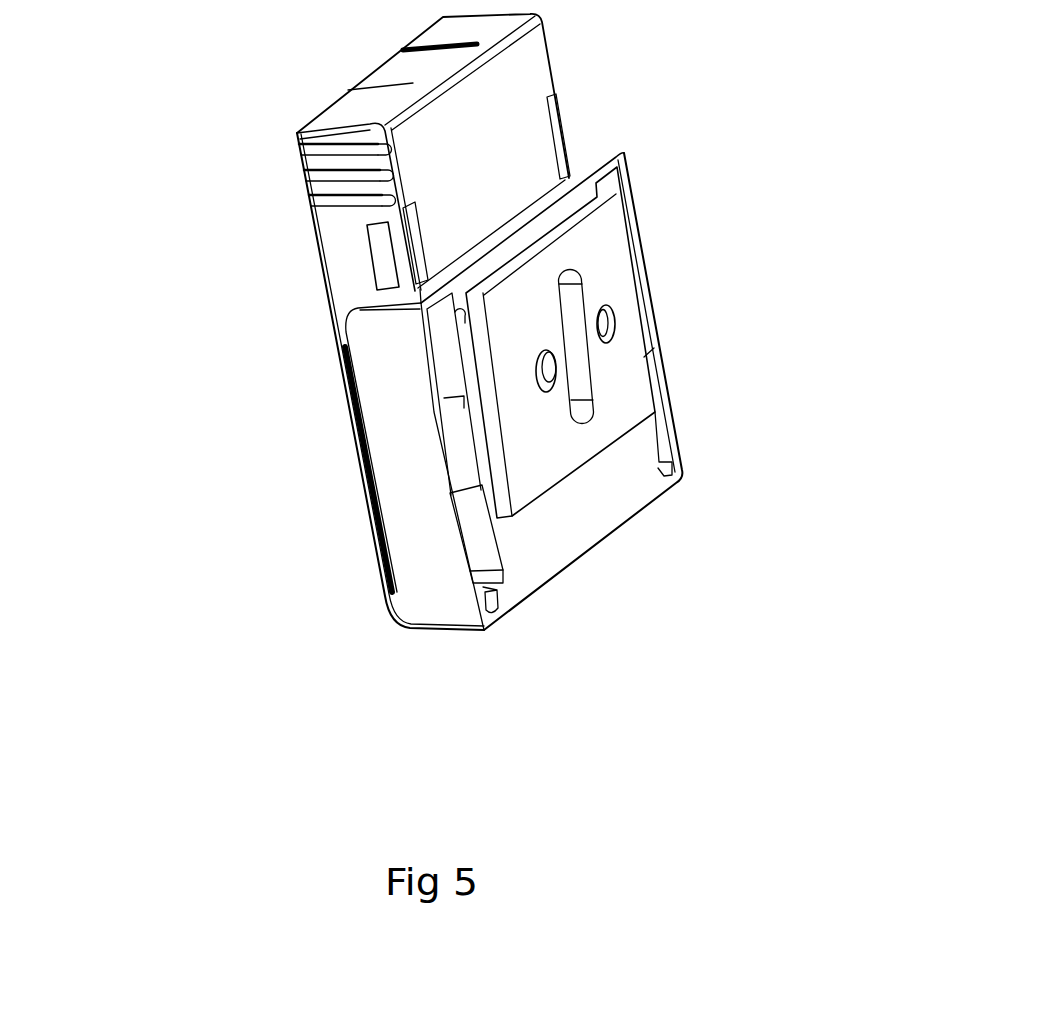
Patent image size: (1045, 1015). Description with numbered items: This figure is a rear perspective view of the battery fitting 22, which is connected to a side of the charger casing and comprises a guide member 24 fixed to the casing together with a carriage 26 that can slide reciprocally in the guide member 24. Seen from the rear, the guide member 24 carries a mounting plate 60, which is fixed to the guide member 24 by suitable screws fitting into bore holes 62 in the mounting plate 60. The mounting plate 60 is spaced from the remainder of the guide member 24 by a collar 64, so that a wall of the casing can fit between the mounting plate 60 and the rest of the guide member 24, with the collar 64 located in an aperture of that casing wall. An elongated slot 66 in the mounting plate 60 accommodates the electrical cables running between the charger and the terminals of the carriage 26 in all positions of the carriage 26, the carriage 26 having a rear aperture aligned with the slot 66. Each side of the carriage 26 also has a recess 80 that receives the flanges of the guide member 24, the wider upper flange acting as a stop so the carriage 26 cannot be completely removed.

The battery fitting 22 is at (297, 483).
The guide member 24 is at (397, 523).
The carriage 26 is at (318, 293).
The mounting plate 60 is at (605, 258).
The bore holes 62 is at (614, 326).
The collar 64 is at (482, 497).
The elongated slot 66 is at (578, 348).
The recess 80 is at (380, 252).